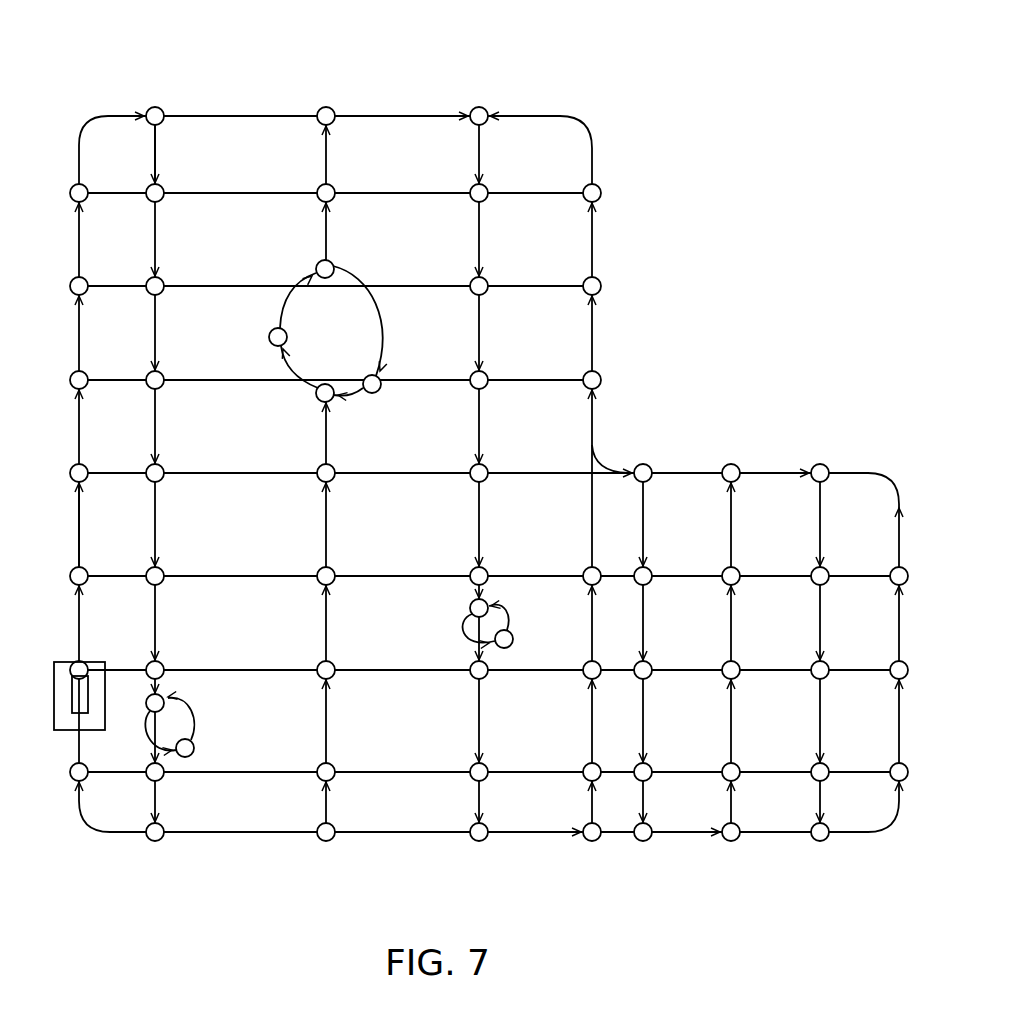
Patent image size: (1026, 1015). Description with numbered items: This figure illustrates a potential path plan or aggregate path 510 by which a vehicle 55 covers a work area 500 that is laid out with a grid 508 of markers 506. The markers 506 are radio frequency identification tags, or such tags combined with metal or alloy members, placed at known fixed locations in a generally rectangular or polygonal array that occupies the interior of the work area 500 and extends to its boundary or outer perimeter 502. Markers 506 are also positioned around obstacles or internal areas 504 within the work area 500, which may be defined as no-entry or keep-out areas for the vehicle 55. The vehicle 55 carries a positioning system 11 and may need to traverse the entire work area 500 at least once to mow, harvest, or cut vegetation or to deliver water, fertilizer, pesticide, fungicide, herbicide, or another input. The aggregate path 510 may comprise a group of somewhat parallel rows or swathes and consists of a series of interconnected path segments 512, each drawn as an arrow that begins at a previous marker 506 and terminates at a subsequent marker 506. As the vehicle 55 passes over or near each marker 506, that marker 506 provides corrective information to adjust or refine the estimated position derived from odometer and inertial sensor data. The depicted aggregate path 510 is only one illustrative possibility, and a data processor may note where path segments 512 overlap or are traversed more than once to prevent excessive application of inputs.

The work area 500 is at (558, 332).
The outer perimeter 502 is at (240, 116).
The internal areas 504 is at (343, 270).
The markers 506 is at (155, 106).
The grid 508 is at (612, 117).
The aggregate path 510 is at (573, 60).
The path segment 512 is at (158, 138).
The vehicle 55 is at (52, 722).
The positioning system 11 is at (72, 714).